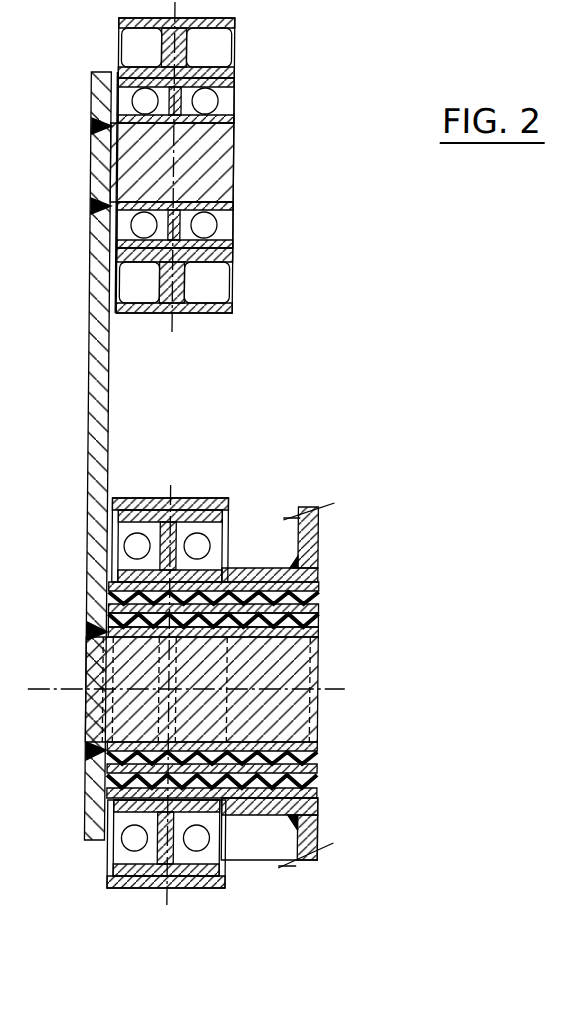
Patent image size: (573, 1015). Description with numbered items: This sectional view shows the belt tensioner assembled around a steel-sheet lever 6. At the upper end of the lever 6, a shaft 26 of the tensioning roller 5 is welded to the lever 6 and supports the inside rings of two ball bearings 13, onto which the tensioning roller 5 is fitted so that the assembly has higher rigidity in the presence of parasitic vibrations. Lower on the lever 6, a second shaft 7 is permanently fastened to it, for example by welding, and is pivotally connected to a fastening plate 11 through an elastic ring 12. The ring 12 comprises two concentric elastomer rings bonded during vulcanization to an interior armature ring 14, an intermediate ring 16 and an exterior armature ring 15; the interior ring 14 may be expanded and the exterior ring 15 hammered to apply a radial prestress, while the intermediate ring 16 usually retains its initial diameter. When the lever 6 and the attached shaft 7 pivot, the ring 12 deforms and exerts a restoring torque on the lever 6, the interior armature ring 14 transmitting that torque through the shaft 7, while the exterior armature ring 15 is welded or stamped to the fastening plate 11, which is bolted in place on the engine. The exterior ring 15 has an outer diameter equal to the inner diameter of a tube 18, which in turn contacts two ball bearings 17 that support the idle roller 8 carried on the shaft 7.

The tensioning roller 5 is at (233, 52).
The bearings 13 is at (235, 100).
The shaft 26 is at (235, 158).
The lever 6 is at (92, 372).
The idle roller 8 is at (200, 498).
The fastening plate 11 is at (325, 532).
The elastic ring 12 is at (324, 597).
The interior armature ring 14 is at (331, 628).
The shaft 7 is at (306, 705).
The intermediate ring 16 is at (332, 767).
The exterior armature ring 15 is at (332, 798).
The tube 18 is at (328, 843).
The roller bearing 17 is at (153, 815).